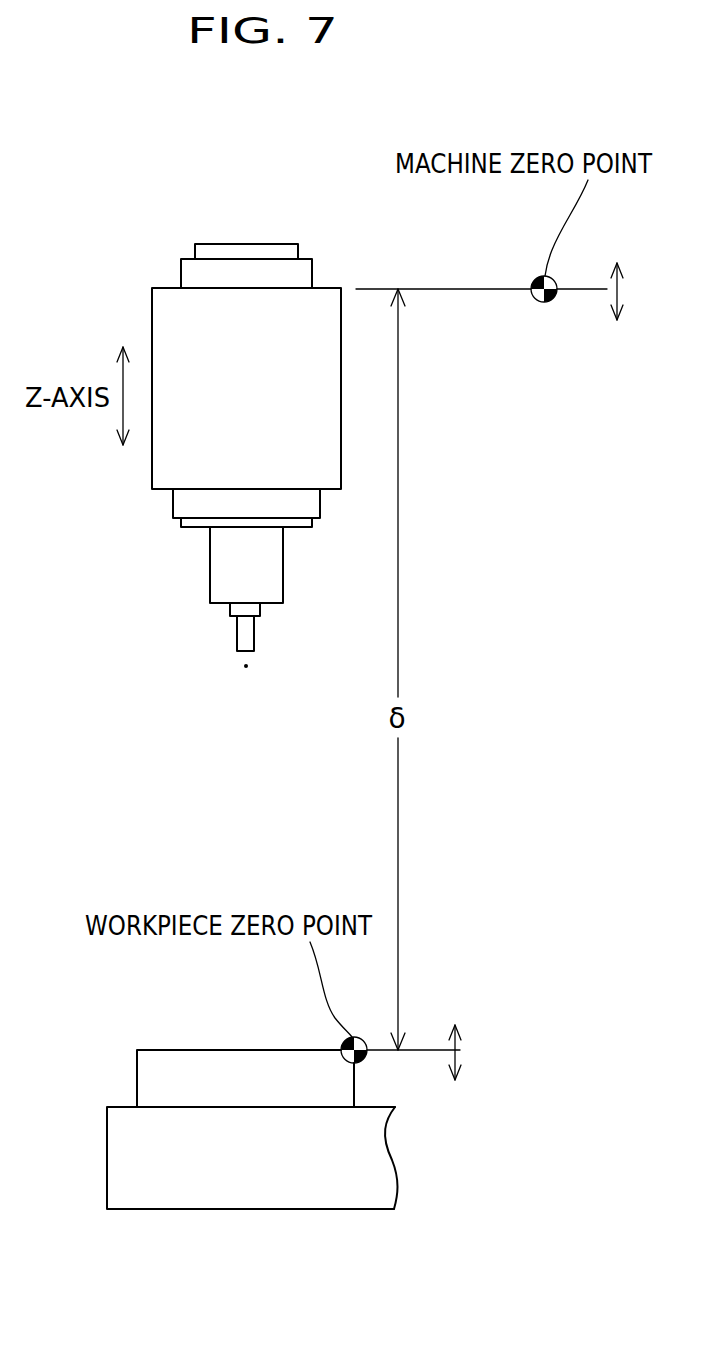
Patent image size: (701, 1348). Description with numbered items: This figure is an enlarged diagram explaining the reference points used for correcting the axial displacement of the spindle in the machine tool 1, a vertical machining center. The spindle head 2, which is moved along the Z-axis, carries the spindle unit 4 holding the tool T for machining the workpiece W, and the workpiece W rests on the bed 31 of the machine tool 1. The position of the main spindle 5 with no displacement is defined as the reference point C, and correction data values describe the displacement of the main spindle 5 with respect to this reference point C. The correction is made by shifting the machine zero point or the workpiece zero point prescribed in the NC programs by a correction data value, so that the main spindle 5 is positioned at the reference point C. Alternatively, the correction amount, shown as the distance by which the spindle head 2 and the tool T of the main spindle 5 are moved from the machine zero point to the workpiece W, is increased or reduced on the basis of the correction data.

The machine tool 1 is at (287, 115).
The spindle head 2 is at (145, 313).
The spindle unit 4 is at (205, 574).
The main spindle 5 is at (230, 609).
The tool T is at (237, 652).
The reference point C is at (246, 666).
The workpiece W is at (167, 1050).
The bed 31 is at (273, 1209).